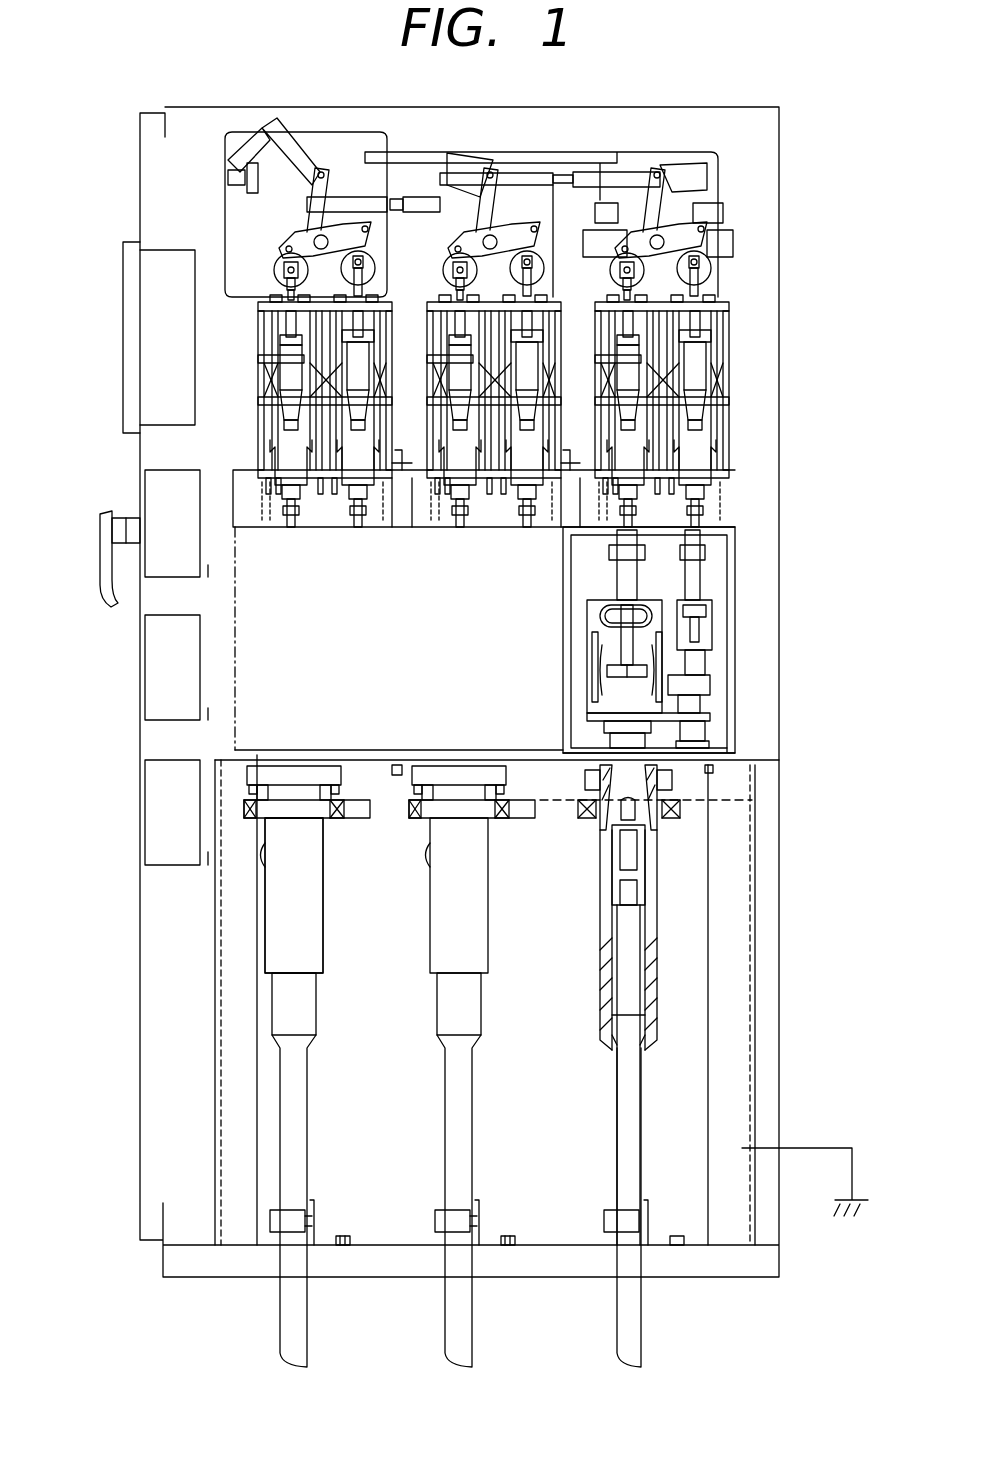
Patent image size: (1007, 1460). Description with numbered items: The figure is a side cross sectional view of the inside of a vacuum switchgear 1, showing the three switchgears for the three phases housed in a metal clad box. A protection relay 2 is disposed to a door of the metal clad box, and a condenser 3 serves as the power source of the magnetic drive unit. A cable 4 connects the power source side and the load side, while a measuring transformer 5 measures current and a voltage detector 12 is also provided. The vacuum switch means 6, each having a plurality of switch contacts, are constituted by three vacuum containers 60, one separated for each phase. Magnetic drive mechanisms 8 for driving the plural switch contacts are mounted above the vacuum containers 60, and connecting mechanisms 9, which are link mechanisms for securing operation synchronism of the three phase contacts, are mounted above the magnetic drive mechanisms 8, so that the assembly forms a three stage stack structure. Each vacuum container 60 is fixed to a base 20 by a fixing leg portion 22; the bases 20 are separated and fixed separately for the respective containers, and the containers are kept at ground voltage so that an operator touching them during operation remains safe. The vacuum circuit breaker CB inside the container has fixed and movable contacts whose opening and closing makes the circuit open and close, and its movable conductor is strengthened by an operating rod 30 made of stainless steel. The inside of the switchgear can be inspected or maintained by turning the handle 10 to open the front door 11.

The vacuum switchgear 1 is at (163, 155).
The protection relay 2 is at (135, 346).
The condenser 3 is at (160, 553).
The cable 4 is at (280, 943).
The measuring transformer 5 is at (245, 803).
The vacuum switch means 6 is at (735, 690).
The magnetic drive mechanisms 8 is at (735, 415).
The connecting mechanisms 9 is at (733, 192).
The handle 10 is at (100, 525).
The front door 11 is at (135, 740).
The voltage detector 12 is at (575, 1003).
The base 20 is at (245, 755).
The fixing leg portion 22 is at (240, 1090).
The operating rod 30 is at (625, 582).
The vacuum container 60 is at (732, 742).
The vacuum circuit breaker CB is at (643, 653).